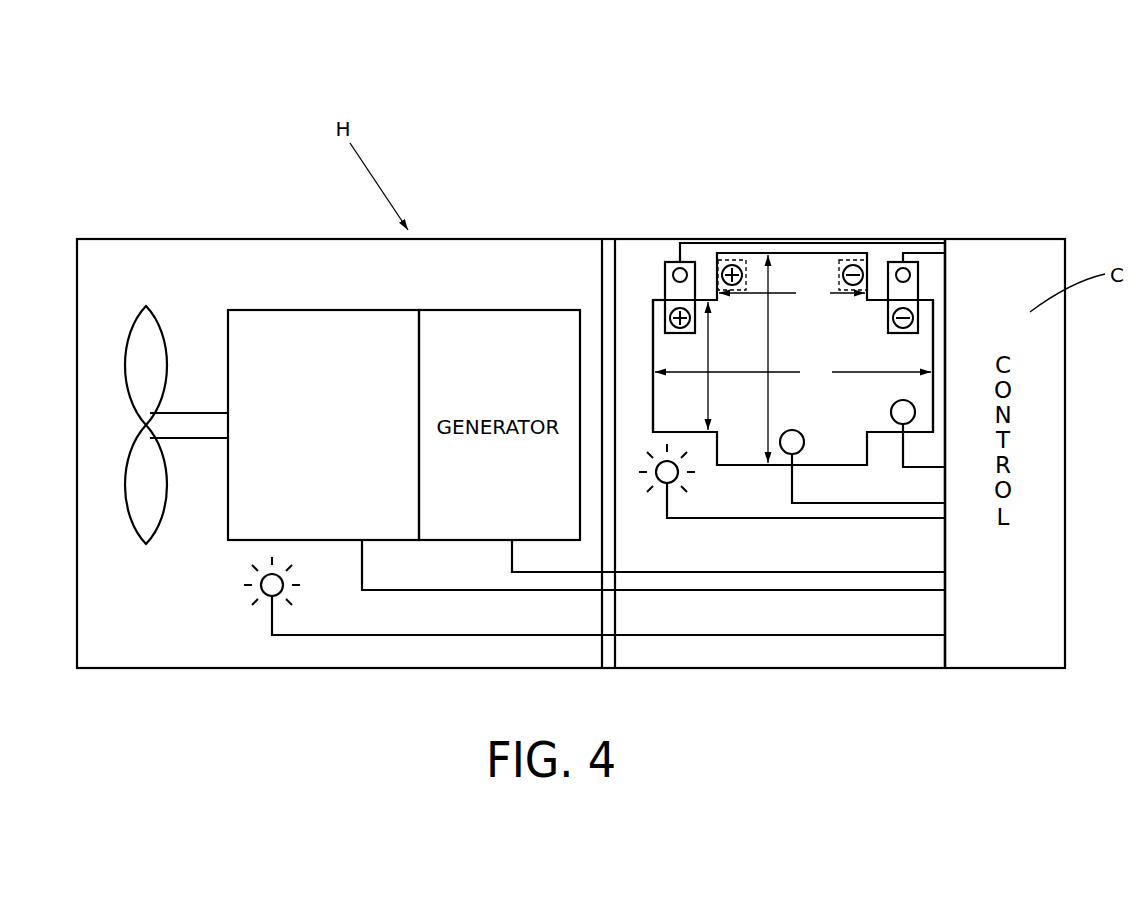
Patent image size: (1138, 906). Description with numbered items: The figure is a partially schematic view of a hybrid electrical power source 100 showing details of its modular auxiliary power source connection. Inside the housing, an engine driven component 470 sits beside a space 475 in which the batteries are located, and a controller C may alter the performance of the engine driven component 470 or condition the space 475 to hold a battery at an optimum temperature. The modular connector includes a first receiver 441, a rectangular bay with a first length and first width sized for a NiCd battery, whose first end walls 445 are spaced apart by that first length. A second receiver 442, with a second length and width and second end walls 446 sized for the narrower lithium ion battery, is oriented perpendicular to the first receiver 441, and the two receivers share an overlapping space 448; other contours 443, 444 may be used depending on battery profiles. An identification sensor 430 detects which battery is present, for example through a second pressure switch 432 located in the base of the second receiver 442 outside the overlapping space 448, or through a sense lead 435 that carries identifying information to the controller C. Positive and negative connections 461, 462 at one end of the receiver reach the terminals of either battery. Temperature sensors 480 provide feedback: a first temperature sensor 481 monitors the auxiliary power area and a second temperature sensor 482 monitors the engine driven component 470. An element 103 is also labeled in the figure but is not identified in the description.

The power source 100 is at (170, 162).
The battery compartment 103 is at (688, 227).
The engine driven component 470 is at (303, 305).
The space 475 is at (668, 668).
The temperature sensors 480 is at (253, 622).
The first temperature sensor 481 is at (657, 478).
The second temperature sensor 482 is at (260, 588).
The identification sensor 430 is at (833, 522).
The second pressure switch 432 is at (785, 455).
The sense lead 435 is at (793, 359).
The first receiver 441 is at (650, 293).
The second receiver 442 is at (782, 252).
The other contour 443 is at (652, 317).
The other contour 444 is at (855, 255).
The first end walls 445 is at (655, 350).
The second end walls 446 is at (797, 253).
The overlapping space 448 is at (806, 341).
The positive connection 461 is at (670, 260).
The negative connection 462 is at (908, 288).